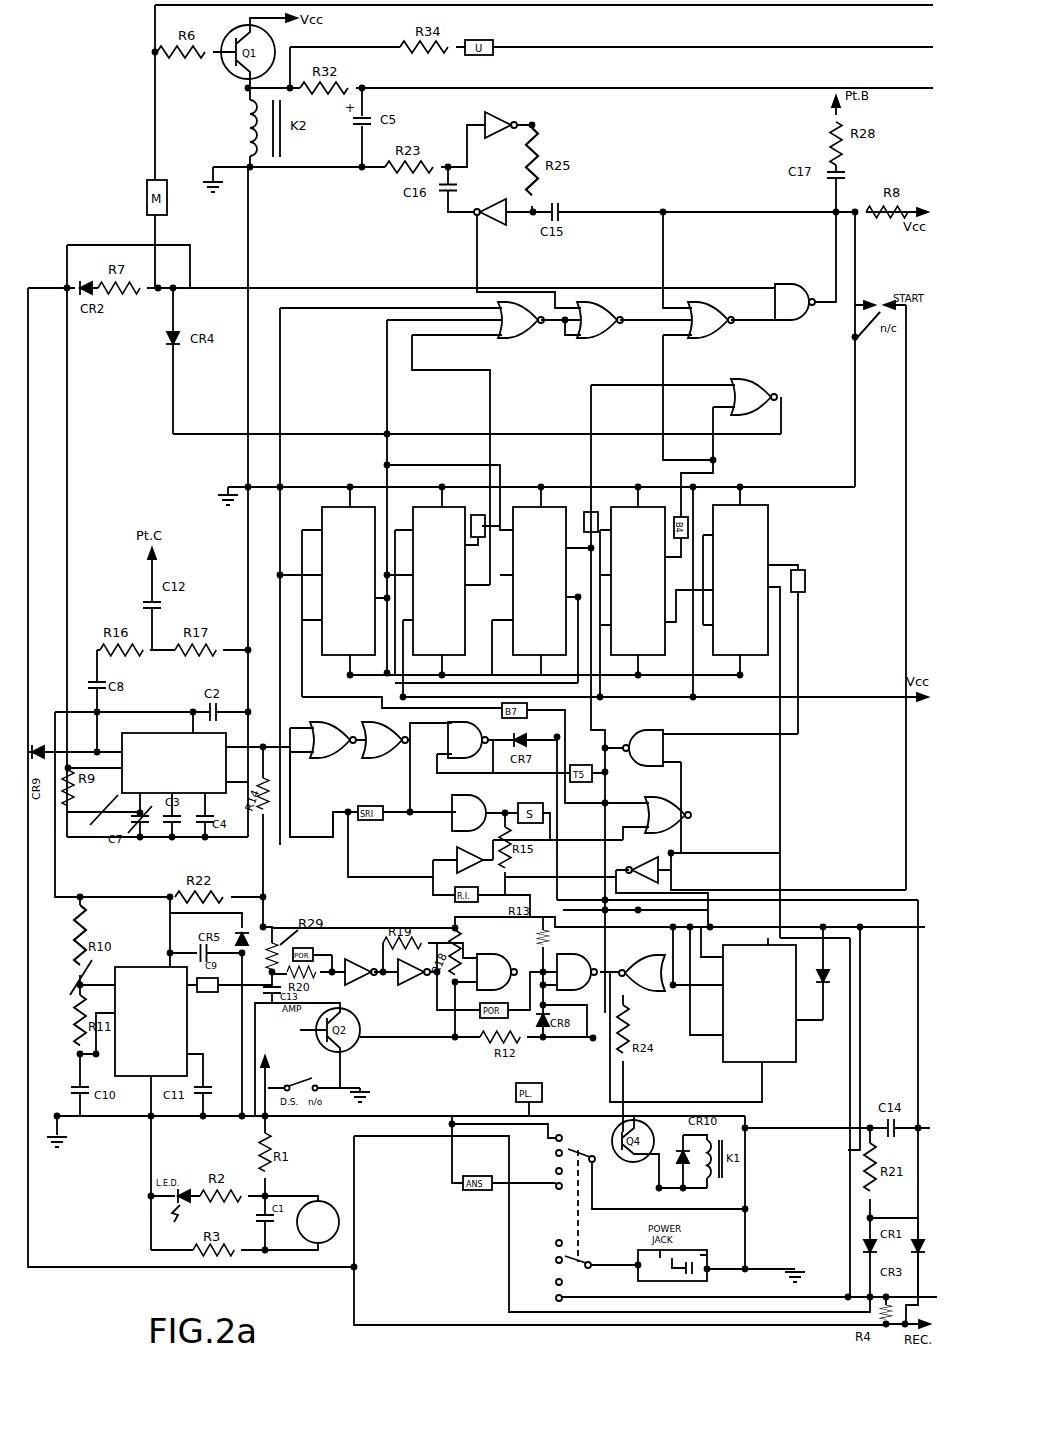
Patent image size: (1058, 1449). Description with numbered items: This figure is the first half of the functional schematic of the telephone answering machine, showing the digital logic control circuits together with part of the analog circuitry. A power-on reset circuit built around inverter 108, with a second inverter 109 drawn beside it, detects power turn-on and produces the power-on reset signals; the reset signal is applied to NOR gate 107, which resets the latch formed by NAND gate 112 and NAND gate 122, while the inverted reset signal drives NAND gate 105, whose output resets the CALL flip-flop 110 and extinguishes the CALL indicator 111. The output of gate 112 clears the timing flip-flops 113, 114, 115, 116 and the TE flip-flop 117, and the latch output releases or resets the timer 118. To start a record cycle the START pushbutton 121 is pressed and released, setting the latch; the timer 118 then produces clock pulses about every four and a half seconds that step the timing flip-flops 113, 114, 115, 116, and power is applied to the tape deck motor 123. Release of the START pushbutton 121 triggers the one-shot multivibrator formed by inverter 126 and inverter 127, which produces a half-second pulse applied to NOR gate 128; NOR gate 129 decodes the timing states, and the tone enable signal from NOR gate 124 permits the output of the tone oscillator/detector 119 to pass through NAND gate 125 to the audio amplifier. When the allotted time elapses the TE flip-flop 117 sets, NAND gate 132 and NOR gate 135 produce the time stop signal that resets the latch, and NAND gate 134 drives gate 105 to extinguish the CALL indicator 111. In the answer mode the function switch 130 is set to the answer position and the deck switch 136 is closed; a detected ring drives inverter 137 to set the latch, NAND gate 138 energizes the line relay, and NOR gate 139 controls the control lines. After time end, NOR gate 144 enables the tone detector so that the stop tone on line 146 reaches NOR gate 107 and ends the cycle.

The NAND gate 105 is at (568, 960).
The NOR gate 107 is at (382, 758).
The inverter 108 is at (358, 980).
The inverter 109 is at (410, 980).
The CALL flip-flop 110 is at (774, 1062).
The CALL indicator 111 is at (825, 990).
The SRI latch NAND gate 112 is at (460, 760).
The timing flip-flop 113 is at (322, 512).
The timing flip-flop 114 is at (438, 495).
The timing flip-flop 115 is at (560, 497).
The timing flip-flop 116 is at (613, 497).
The TE flip-flop 117 is at (765, 510).
The timer 118 is at (180, 1020).
The tone oscillator/detector 119 is at (170, 740).
The START pushbutton 121 is at (862, 305).
The SRI latch NAND gate 122 is at (454, 818).
The tape deck motor 123 is at (320, 1201).
The NOR gate 124 is at (714, 338).
The NAND gate 125 is at (796, 320).
The inverter 126 is at (482, 200).
The inverter 127 is at (497, 114).
The NOR gate 128 is at (597, 338).
The NOR gate 129 is at (510, 338).
The function switch 130 is at (581, 1216).
The NAND gate 132 is at (666, 750).
The NAND gate 134 is at (486, 960).
The NOR gate 135 is at (680, 808).
The tape deck switch 136 is at (290, 1080).
The inverter 137 is at (455, 860).
The NAND gate 138 is at (652, 962).
The NOR gate 139 is at (742, 382).
The NOR gate 144 is at (322, 758).
The STOP TONE line 146 is at (272, 725).